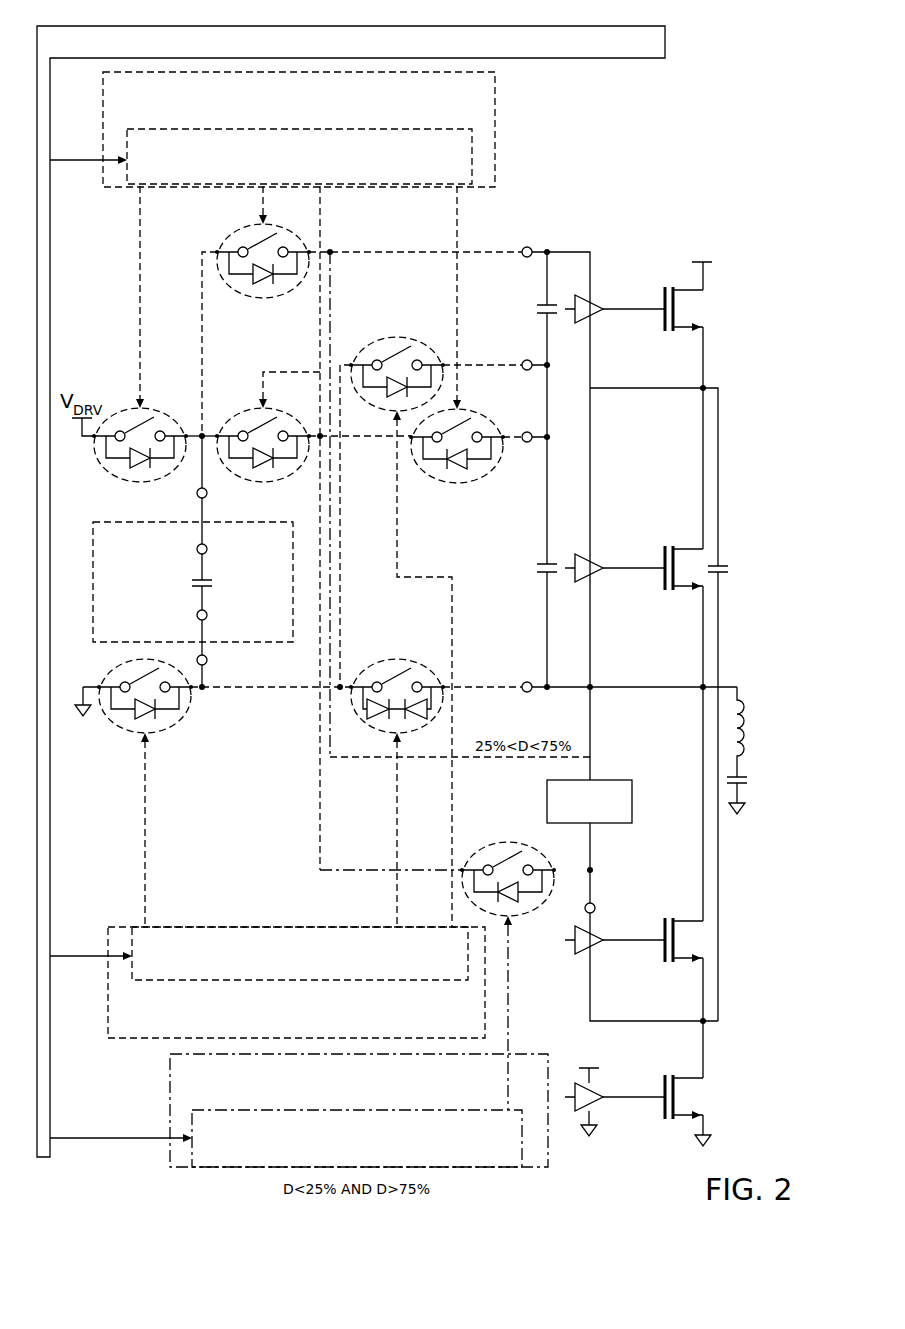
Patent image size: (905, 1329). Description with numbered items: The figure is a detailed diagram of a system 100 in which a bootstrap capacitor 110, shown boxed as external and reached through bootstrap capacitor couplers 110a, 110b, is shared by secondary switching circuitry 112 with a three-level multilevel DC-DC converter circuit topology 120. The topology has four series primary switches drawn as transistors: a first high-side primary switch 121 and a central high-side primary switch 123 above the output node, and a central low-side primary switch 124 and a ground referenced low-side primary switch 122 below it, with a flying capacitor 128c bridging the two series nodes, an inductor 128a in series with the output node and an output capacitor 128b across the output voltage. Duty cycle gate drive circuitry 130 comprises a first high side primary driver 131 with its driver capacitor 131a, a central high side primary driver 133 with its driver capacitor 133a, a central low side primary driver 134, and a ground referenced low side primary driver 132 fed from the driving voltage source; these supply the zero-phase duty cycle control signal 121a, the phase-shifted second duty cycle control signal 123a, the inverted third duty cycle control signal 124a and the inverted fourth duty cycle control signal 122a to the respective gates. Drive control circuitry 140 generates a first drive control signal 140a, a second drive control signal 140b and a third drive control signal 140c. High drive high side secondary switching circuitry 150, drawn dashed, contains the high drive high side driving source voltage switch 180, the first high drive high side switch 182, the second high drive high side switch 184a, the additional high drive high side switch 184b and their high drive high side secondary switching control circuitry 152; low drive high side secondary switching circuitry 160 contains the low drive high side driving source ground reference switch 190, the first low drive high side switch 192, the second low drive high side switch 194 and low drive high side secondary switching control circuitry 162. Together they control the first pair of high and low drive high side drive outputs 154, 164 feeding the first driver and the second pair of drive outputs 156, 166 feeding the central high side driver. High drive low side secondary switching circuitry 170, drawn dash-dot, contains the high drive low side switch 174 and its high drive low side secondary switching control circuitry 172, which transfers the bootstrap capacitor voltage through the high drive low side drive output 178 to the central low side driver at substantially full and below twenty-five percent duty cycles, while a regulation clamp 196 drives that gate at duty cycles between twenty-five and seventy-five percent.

The power converter 100 is at (776, 47).
The bootstrap capacitor 110 is at (213, 583).
The bootstrap capacitor coupler 110a is at (197, 495).
The bootstrap capacitor coupler 110b is at (208, 662).
The secondary switching circuitry 112 is at (148, 1171).
The multilevel DC-DC converter circuit topology 120 is at (737, 218).
The first high-side primary switch 121 is at (664, 331).
The first duty cycle control signal 121a is at (633, 312).
The ground referenced low-side primary switch 122 is at (664, 1120).
The fourth duty cycle control signal 122a is at (636, 1101).
The central high-side primary switch 123 is at (664, 590).
The second duty cycle control signal 123a is at (633, 572).
The central low-side primary switch 124 is at (664, 962).
The third duty cycle control signal 124a is at (636, 944).
The inductor 128a is at (748, 722).
The output capacitor 128b is at (748, 780).
The flying capacitor 128c is at (732, 571).
The duty cycle gate drive circuitry 130 is at (610, 226).
The first high side primary driver 131 is at (598, 302).
The driver capacitor 131a is at (536, 308).
The ground referenced low side primary driver 132 is at (580, 1110).
The central high side primary driver 133 is at (598, 560).
The driver capacitor 133a is at (536, 568).
The central low side primary driver 134 is at (576, 950).
The drive control circuitry 140 is at (666, 36).
The first drive control signal 140a is at (90, 161).
The second drive control signal 140b is at (95, 955).
The third drive control signal 140c is at (100, 1139).
The high drive high side secondary switching circuitry 150 is at (496, 118).
The high drive high side secondary switching control circuitry 152 is at (400, 186).
The high drive high side drive output 154 is at (527, 247).
The high drive high side drive output 156 is at (527, 443).
The low drive high side secondary switching circuitry 160 is at (138, 1040).
The low drive high side secondary switching control circuitry 162 is at (260, 927).
The low drive high side drive output 164 is at (527, 371).
The low drive high side drive output 166 is at (527, 682).
The high drive low side secondary switching circuitry 170 is at (532, 1054).
The high drive low side secondary switching control circuitry 172 is at (498, 1168).
The high drive low side switch 174 is at (508, 842).
The high drive low side drive output 178 is at (596, 908).
The high drive high side driving source voltage switch 180 is at (122, 412).
The first high drive high side switch 182 is at (221, 242).
The second high drive high side switch 184a is at (237, 410).
The additional high drive high side switch 184b is at (450, 483).
The low drive high side driving source ground reference switch 190 is at (122, 730).
The first low drive high side switch 192 is at (388, 338).
The second low drive high side switch 194 is at (388, 660).
The regulation clamp 196 is at (634, 806).